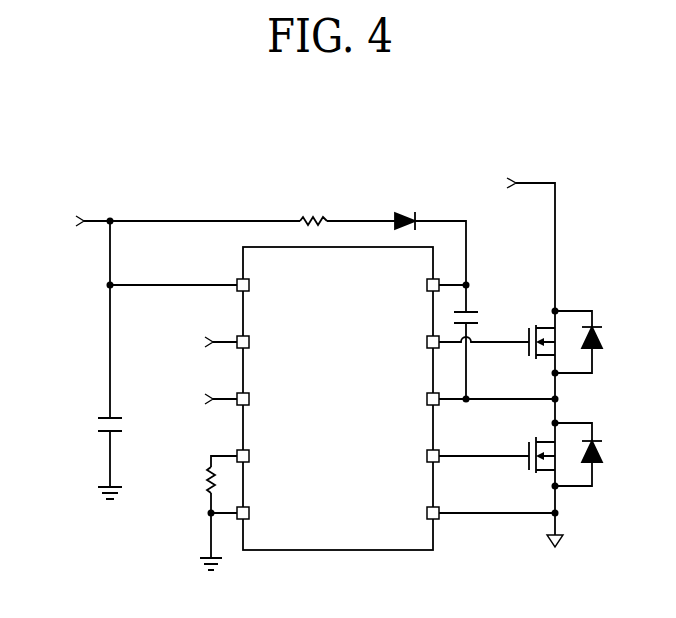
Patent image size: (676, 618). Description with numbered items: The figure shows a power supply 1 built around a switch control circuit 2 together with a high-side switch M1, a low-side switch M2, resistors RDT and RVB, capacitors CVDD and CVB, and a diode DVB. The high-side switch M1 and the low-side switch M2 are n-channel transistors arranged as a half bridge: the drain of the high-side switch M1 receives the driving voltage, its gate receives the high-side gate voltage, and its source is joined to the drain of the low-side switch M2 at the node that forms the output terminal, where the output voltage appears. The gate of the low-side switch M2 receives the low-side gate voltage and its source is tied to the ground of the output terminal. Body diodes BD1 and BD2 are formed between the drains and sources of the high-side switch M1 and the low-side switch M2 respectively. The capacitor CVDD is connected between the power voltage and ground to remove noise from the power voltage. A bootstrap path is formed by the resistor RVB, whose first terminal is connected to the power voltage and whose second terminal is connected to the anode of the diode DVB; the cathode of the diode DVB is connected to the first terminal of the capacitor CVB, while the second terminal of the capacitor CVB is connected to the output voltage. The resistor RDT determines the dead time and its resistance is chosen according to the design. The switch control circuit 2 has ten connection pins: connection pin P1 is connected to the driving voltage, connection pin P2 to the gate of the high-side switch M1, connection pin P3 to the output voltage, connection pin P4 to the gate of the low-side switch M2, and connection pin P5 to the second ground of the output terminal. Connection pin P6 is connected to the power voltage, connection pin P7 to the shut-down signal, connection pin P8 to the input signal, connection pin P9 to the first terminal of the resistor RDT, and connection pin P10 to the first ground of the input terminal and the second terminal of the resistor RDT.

The power supply 1 is at (570, 155).
The switch control circuit 2 is at (338, 550).
The resistor RVB is at (314, 207).
The diode DVB is at (404, 205).
The capacitor CVDD is at (80, 429).
The capacitor CVB is at (487, 319).
The resistor RDT is at (187, 482).
The high-side switch M1 is at (547, 360).
The low-side switch M2 is at (547, 473).
The body diode BD1 is at (598, 342).
The body diode BD2 is at (598, 454).
The connection pin P1 is at (418, 286).
The connection pin P2 is at (418, 343).
The connection pin P3 is at (418, 400).
The connection pin P4 is at (418, 457).
The connection pin P5 is at (418, 514).
The connection pin P6 is at (259, 286).
The connection pin P7 is at (259, 343).
The connection pin P8 is at (259, 400).
The connection pin P9 is at (259, 457).
The connection pin P10 is at (262, 514).